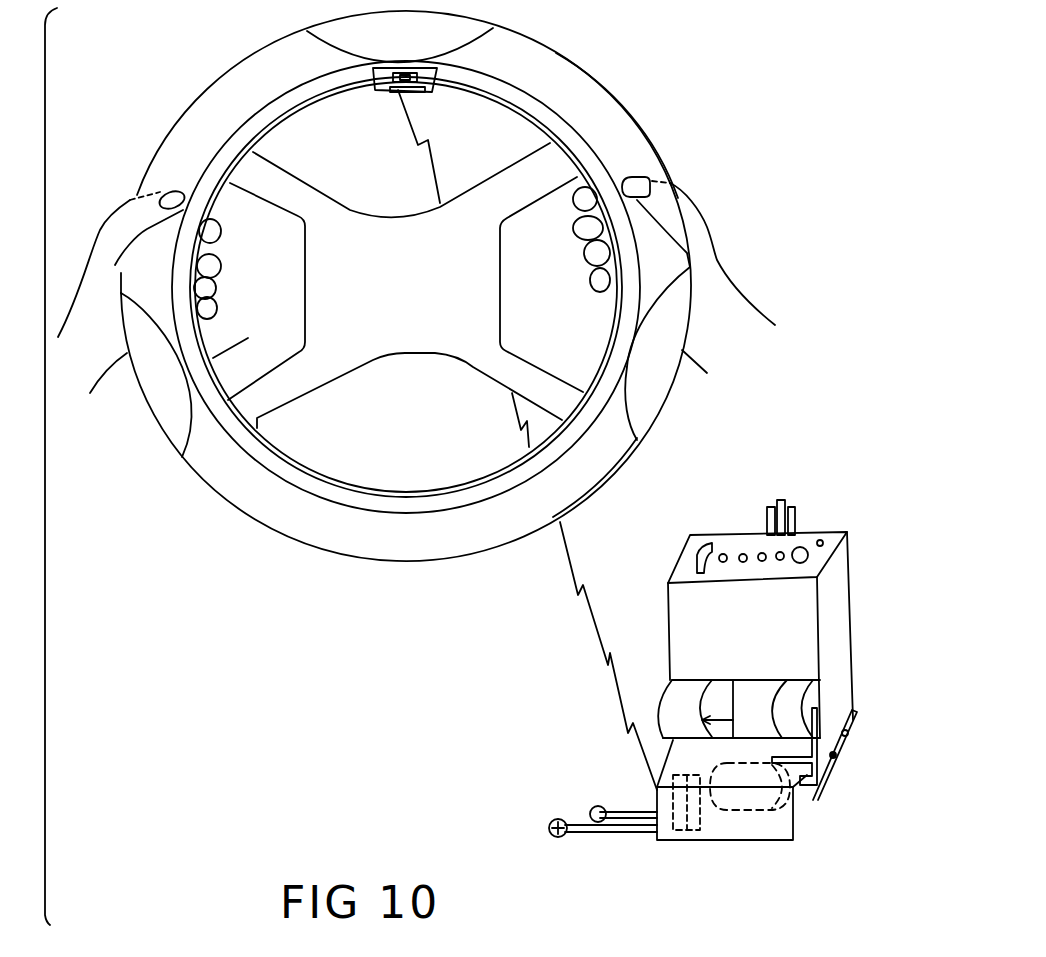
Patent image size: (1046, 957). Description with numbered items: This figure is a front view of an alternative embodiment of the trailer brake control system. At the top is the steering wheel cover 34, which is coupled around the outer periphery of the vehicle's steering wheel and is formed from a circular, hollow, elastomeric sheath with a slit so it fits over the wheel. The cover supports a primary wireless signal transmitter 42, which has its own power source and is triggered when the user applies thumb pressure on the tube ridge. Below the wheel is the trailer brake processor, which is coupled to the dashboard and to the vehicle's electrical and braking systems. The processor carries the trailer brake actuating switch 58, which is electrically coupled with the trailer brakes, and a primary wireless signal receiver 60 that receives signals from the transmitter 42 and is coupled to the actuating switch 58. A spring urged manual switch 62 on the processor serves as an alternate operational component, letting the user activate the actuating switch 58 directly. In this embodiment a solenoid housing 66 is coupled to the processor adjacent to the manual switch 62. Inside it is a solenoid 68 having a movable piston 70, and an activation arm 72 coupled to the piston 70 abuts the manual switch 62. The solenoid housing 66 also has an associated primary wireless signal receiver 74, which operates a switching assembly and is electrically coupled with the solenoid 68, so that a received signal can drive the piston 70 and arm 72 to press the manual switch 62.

The steering wheel cover 34 is at (190, 110).
The primary wireless signal transmitter 42 is at (385, 78).
The trailer brake actuating switch 58 is at (740, 535).
The spring urged manual switch 62 is at (727, 713).
The solenoid housing 66 is at (792, 842).
The solenoid 68 is at (747, 810).
The primary wireless signal receiver 60 is at (673, 827).
The primary wireless signal receiver 74 is at (683, 827).
The activation arm 72 is at (817, 778).
The movable piston 70 is at (793, 797).